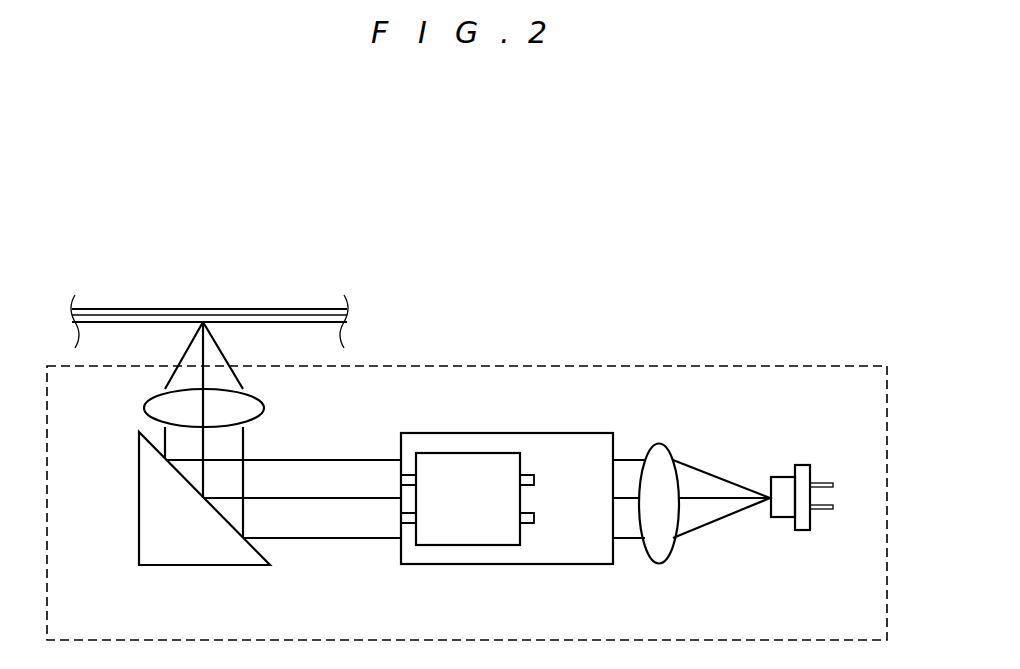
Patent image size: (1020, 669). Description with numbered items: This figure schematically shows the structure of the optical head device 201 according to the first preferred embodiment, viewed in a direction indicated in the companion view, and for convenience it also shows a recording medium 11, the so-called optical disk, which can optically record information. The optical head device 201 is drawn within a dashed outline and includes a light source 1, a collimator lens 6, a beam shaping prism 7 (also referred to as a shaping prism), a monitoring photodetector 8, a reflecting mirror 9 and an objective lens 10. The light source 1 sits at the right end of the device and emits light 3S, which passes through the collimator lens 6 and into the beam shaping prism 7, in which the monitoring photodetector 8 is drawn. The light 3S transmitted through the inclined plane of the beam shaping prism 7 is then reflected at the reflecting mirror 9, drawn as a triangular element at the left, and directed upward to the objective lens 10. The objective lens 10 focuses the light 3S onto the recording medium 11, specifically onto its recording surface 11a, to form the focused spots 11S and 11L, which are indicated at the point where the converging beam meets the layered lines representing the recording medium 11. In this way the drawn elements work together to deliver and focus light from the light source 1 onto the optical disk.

The light source 1 is at (803, 470).
The light 3S is at (315, 539).
The collimator lens 6 is at (659, 452).
The beam shaping prism 7 is at (550, 555).
The monitoring photodetector 8 is at (477, 535).
The reflecting mirror 9 is at (148, 542).
The objective lens 10 is at (150, 405).
The recording medium 11 is at (320, 308).
The recording surface 11a is at (260, 313).
The focused spot 11L is at (203, 309).
The focused spot 11S is at (203, 309).
The optical head device 201 is at (466, 362).